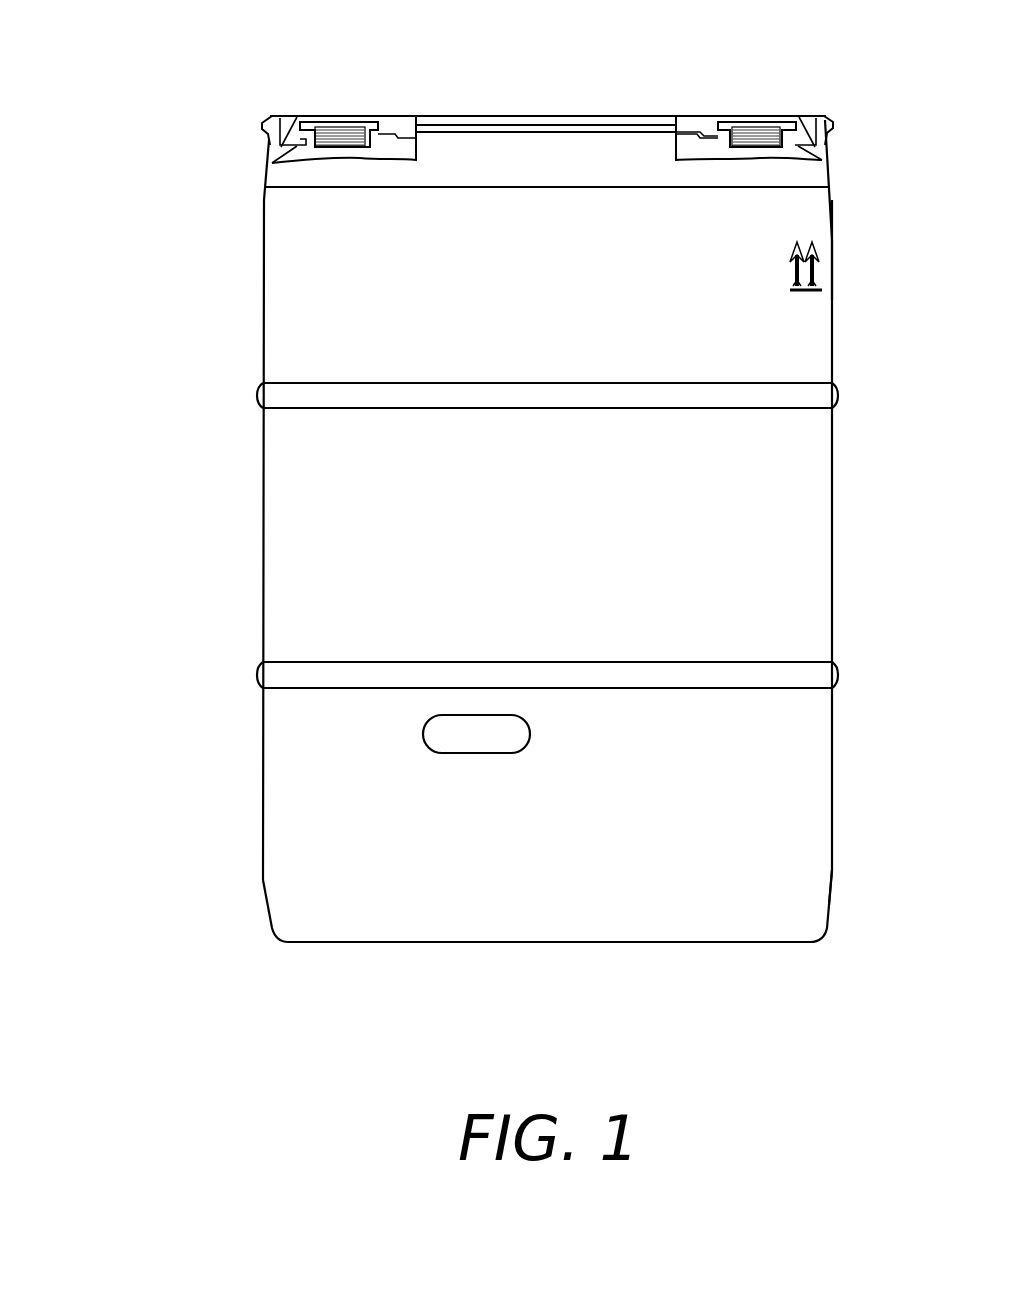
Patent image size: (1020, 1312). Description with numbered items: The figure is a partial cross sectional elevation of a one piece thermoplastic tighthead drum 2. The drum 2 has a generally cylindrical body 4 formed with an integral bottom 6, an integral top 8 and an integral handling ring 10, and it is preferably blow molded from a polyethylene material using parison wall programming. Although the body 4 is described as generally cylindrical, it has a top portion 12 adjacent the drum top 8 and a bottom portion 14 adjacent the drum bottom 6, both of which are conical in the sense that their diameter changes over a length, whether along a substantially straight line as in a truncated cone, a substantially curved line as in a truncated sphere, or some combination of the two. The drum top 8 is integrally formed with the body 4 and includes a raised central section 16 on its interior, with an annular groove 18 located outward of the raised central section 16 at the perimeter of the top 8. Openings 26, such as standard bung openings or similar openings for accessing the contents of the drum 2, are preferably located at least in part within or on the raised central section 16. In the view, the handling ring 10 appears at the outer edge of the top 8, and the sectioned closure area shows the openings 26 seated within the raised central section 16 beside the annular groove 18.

The tighthead drum 2 is at (143, 466).
The body 4 is at (262, 360).
The bottom 6 is at (352, 942).
The top 8 is at (500, 92).
The handling ring 10 is at (831, 118).
The top portion 12 is at (830, 201).
The bottom portion 14 is at (830, 908).
The raised central section 16 is at (697, 130).
The annular groove 18 is at (283, 118).
The openings 26 is at (351, 130).